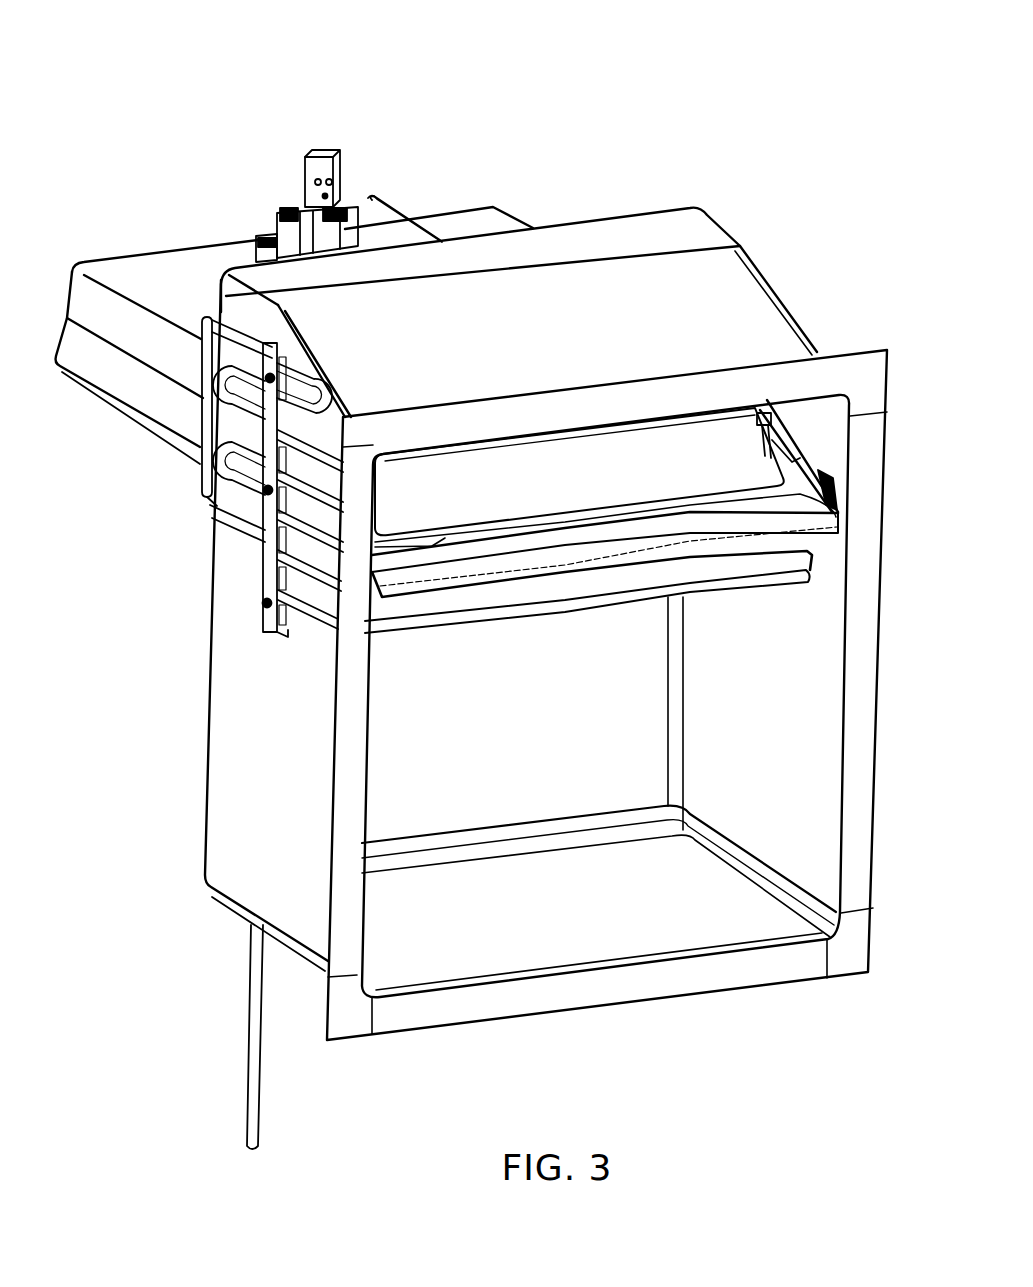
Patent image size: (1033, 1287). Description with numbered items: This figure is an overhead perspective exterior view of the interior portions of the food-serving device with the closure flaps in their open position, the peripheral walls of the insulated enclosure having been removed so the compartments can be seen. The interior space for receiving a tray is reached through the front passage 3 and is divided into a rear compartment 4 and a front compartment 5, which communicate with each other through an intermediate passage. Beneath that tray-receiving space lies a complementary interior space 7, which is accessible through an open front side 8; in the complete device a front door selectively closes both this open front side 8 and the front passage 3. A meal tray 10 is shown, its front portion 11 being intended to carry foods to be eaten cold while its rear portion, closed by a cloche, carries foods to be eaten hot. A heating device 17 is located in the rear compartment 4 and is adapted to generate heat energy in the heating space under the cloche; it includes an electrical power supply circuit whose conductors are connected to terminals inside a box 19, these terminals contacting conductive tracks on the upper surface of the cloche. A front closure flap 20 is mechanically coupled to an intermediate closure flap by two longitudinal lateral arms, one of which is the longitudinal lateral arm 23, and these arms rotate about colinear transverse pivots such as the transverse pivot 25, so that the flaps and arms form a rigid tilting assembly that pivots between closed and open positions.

The front passage 3 is at (825, 419).
The rear compartment 4 is at (143, 284).
The front compartment 5 is at (567, 306).
The complementary interior space 7 is at (482, 913).
The open front side 8 is at (643, 945).
The meal tray 10 is at (606, 455).
The front portion 11 is at (652, 455).
The heating device 17 is at (302, 155).
The box 19 is at (268, 213).
The front closure flap 20 is at (453, 603).
The longitudinal lateral arm 23 is at (790, 432).
The transverse pivot 25 is at (768, 450).